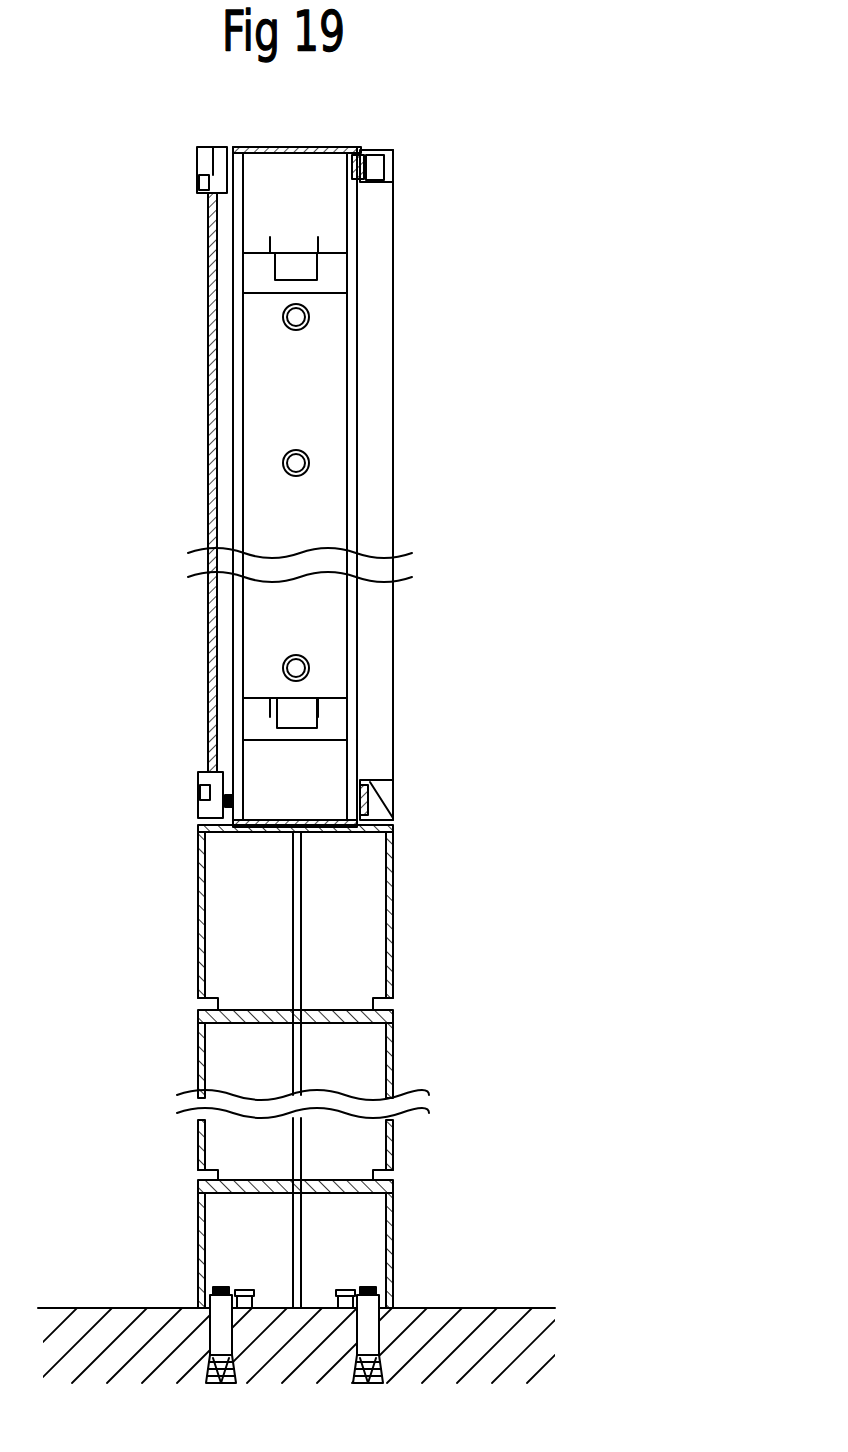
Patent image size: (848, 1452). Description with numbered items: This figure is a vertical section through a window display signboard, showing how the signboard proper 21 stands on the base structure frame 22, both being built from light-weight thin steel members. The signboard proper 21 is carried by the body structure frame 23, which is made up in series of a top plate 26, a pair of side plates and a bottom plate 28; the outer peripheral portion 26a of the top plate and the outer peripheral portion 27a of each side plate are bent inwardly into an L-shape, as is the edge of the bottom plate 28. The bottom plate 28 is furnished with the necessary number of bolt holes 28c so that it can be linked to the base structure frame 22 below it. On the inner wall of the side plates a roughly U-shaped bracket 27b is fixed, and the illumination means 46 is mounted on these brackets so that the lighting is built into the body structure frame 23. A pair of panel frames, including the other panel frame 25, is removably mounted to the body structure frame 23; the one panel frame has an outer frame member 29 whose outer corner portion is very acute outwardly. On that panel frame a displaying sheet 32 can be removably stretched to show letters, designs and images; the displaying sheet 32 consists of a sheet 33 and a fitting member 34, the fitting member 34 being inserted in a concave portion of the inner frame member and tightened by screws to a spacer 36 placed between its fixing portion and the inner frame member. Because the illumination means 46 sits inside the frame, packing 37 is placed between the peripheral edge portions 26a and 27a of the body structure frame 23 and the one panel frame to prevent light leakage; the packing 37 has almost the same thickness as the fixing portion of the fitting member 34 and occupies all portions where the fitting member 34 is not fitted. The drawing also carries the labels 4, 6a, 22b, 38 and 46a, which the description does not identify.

The signboard proper 21 is at (530, 170).
The fastening bolt 4 is at (376, 182).
The upper cap member 6a is at (364, 150).
The base structure frame 22 is at (395, 1053).
The partition wall 22b is at (293, 948).
The body structure frame 23 is at (298, 139).
The other panel frame 25 is at (197, 190).
The top plate 26 is at (230, 233).
The outer peripheral portion of top plate 26a is at (228, 147).
The outer peripheral portion of side plate 27a is at (233, 372).
The bracket 27b is at (295, 481).
The bottom plate 28 is at (335, 835).
The bolt holes 28c is at (270, 836).
The outer frame member 29 is at (392, 163).
The displaying sheet 32 is at (395, 455).
The sheet 33 is at (393, 512).
The fitting member 34 is at (392, 150).
The spacer 36 is at (388, 178).
The packing 37 is at (226, 147).
The washer 38 is at (196, 176).
The illumination means 46 is at (305, 330).
The lug 46a is at (279, 273).